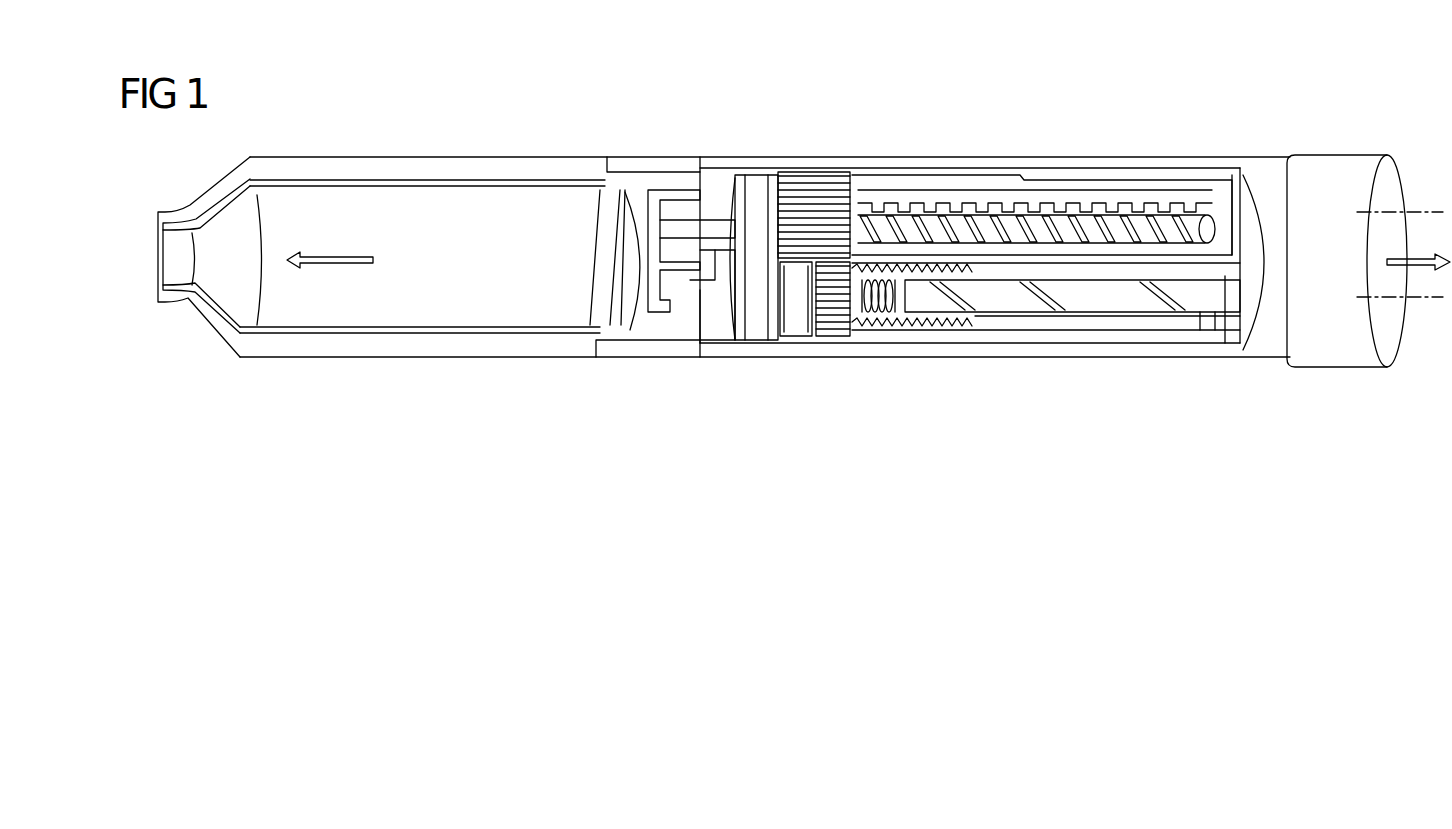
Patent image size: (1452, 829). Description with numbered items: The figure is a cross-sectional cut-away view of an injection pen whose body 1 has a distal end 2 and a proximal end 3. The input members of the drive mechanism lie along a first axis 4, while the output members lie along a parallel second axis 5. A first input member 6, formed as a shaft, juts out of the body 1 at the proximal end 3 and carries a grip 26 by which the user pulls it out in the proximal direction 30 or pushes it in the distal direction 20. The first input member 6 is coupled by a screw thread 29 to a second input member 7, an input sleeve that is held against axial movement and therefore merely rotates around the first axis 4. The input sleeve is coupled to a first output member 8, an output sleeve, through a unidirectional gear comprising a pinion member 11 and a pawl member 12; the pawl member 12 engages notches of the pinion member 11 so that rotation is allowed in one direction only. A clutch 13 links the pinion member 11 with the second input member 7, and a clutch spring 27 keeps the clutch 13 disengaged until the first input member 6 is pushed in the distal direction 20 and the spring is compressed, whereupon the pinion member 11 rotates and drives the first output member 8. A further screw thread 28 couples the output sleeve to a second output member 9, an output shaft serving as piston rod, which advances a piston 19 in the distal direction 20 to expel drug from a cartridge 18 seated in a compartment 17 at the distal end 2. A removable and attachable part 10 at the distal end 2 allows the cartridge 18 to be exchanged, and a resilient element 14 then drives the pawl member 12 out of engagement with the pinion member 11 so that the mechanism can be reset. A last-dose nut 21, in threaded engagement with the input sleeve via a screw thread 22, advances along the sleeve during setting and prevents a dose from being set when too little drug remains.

The body 1 is at (1118, 352).
The distal end 2 is at (170, 262).
The proximal end 3 is at (1390, 356).
The first axis 4 is at (1430, 297).
The second axis 5 is at (1430, 212).
The first input member 6 is at (1030, 300).
The second input member 7 is at (1010, 333).
The first output member 8 is at (950, 182).
The second output member 9 is at (1100, 196).
The removable and attachable part 10 is at (312, 176).
The pinion member 11 is at (758, 287).
The pawl member 12 is at (725, 292).
The clutch 13 is at (792, 296).
The resilient element 14 is at (740, 330).
The compartment 17 is at (430, 206).
The cartridge 18 is at (540, 186).
The piston 19 is at (600, 256).
The distal direction 20 is at (340, 257).
The last-dose nut 21 is at (826, 320).
The screw thread 22 is at (920, 322).
The grip 26 is at (1330, 168).
The clutch spring 27 is at (882, 302).
The further screw thread 28 is at (1033, 186).
The screw thread 29 is at (1186, 314).
The proximal direction 30 is at (1392, 256).